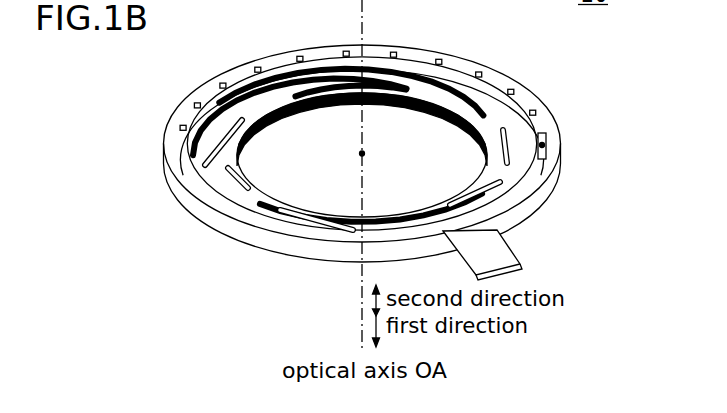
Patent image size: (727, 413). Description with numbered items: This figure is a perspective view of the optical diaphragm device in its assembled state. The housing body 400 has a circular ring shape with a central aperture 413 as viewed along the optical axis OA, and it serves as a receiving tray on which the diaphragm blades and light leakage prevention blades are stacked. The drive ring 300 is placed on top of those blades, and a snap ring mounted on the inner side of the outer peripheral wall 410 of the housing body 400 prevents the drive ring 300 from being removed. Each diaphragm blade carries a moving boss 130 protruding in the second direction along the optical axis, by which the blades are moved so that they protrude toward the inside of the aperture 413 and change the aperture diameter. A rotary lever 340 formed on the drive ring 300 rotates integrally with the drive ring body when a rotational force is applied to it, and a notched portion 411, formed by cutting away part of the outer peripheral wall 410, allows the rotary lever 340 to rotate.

The moving boss 130 is at (197, 124).
The drive ring 300 is at (542, 168).
The rotary lever 340 is at (490, 258).
The housing body 400 is at (237, 64).
The outer peripheral wall 410 is at (519, 82).
The notched portion 411 is at (557, 196).
The aperture 413 is at (284, 182).